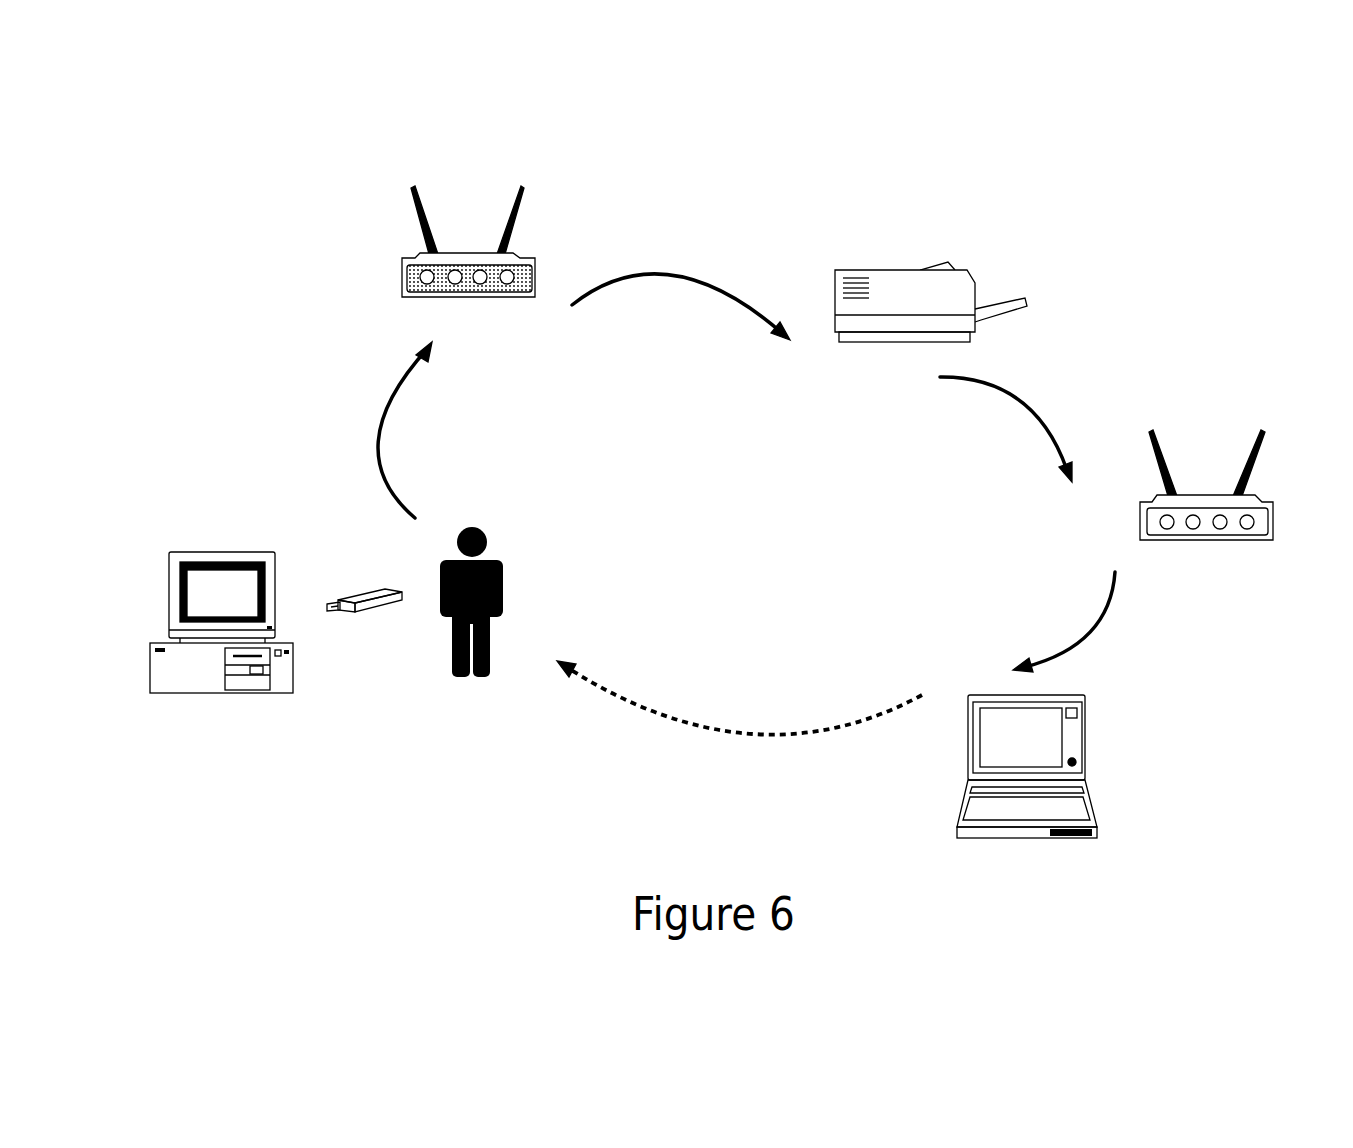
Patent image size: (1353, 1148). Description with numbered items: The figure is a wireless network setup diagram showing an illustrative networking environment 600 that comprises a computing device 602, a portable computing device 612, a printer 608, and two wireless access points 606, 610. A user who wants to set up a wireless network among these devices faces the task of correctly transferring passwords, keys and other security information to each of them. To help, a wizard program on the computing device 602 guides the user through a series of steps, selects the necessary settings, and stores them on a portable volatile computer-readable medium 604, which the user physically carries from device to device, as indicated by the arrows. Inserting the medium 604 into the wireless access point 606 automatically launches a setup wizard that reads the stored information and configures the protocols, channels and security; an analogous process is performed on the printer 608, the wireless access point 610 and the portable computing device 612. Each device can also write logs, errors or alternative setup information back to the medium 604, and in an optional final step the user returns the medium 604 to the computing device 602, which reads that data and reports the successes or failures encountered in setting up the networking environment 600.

The networking environment 600 is at (1040, 124).
The computing device 602 is at (150, 663).
The portable volatile computer-readable medium 604 is at (343, 612).
The wireless access point 606 is at (402, 272).
The printer 608 is at (907, 268).
The wireless access point 610 is at (1205, 540).
The portable computing device 612 is at (1087, 765).